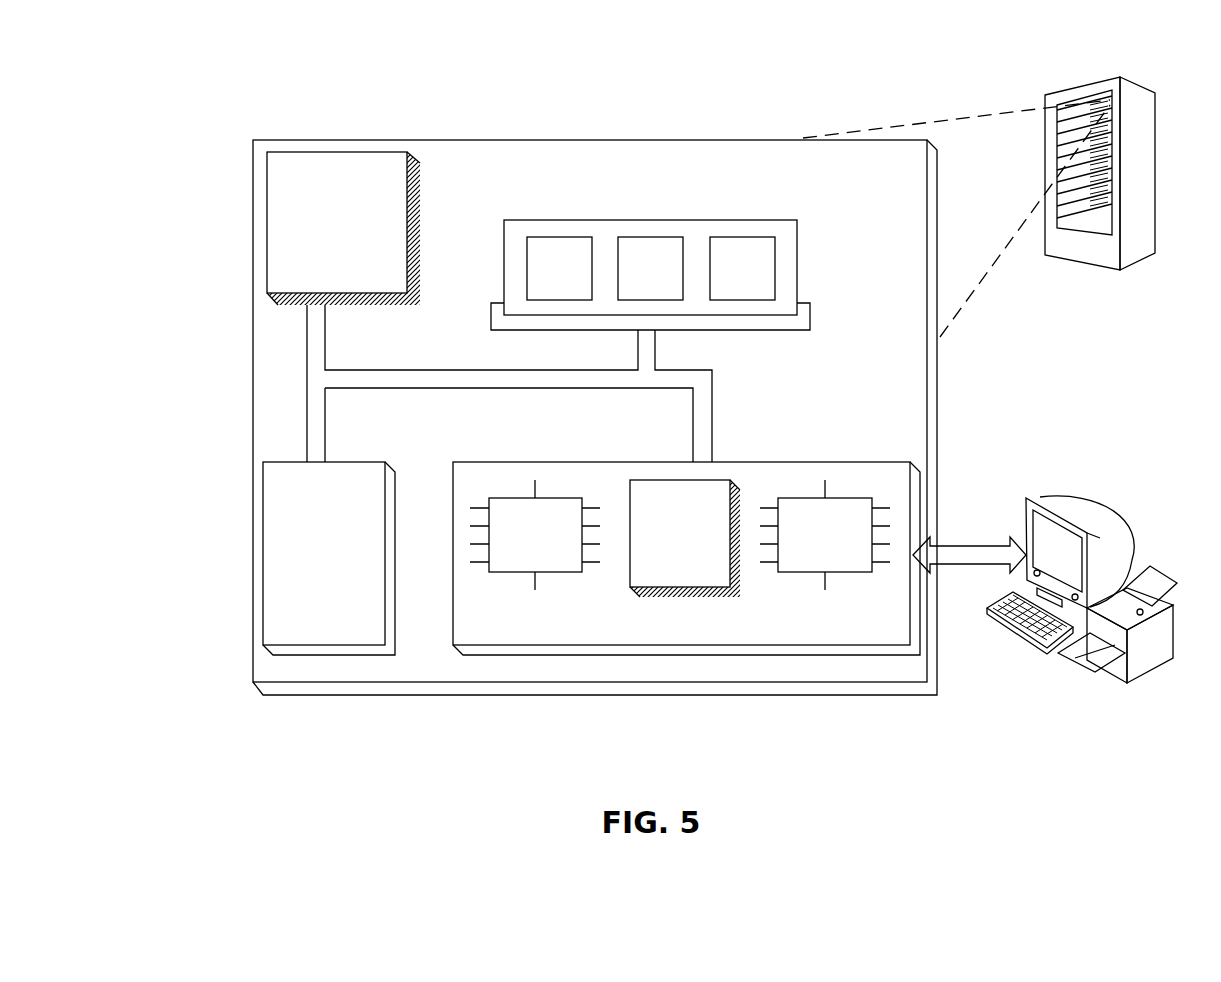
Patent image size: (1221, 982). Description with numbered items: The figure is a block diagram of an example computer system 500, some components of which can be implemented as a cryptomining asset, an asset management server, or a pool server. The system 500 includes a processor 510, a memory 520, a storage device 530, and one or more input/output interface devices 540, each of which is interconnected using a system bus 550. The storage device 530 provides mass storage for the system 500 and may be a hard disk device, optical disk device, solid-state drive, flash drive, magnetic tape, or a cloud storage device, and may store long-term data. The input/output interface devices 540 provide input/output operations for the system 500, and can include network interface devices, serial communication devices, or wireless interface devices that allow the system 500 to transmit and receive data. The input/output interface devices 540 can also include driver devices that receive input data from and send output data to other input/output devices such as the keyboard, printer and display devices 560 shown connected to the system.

The computer system 500 is at (193, 92).
The processor 510 is at (343, 228).
The memory 520 is at (797, 263).
The storage device 530 is at (329, 558).
The input/output interface devices 540 is at (868, 462).
The system bus 550 is at (508, 388).
The keyboard, printer and display devices 560 is at (1027, 500).